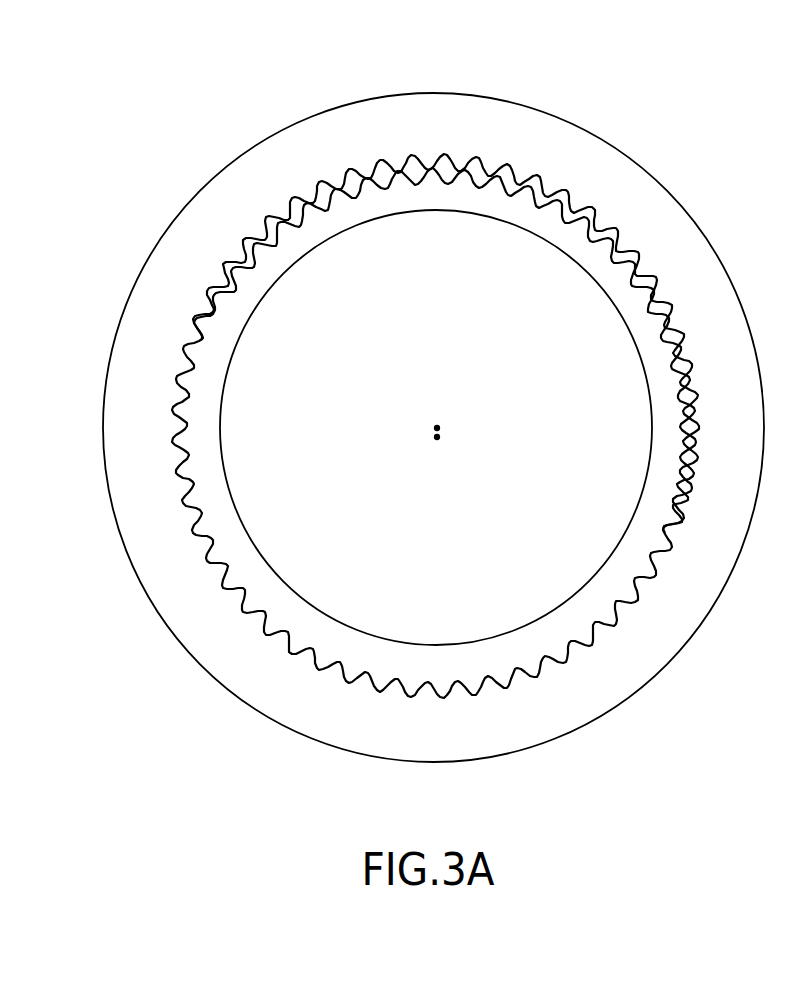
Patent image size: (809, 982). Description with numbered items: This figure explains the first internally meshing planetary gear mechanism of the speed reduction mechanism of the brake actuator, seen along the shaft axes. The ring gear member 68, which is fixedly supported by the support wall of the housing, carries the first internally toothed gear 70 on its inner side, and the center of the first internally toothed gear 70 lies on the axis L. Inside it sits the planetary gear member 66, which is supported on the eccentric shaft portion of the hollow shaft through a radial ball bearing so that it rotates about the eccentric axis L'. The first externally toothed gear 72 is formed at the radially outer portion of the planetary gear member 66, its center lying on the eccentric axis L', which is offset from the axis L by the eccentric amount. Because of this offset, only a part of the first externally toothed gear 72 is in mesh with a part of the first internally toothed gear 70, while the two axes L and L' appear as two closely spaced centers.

The planetary gear member 66 is at (441, 192).
The ring gear member 68 is at (577, 146).
The first internally toothed gear 70 is at (467, 166).
The first externally toothed gear 72 is at (491, 176).
The axis L is at (482, 410).
The eccentric axis L' is at (479, 460).